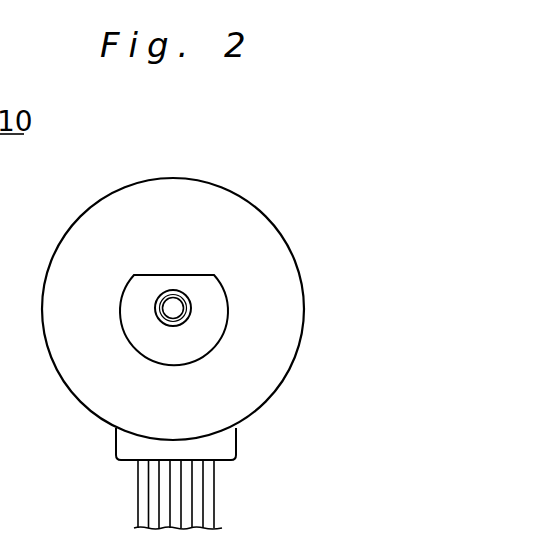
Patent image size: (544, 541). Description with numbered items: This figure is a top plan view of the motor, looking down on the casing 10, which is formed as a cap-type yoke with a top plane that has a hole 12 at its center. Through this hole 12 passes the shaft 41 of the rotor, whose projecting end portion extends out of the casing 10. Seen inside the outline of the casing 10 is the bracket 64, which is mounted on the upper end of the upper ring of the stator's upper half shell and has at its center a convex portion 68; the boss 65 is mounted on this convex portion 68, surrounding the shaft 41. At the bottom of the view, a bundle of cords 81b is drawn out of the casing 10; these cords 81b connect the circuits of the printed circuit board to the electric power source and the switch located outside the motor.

The casing 10 is at (262, 222).
The hole 12 is at (217, 346).
The shaft 41 is at (165, 320).
The bracket 64 is at (215, 298).
The boss 65 is at (193, 323).
The convex portion 68 is at (193, 275).
The cords 81b is at (210, 497).